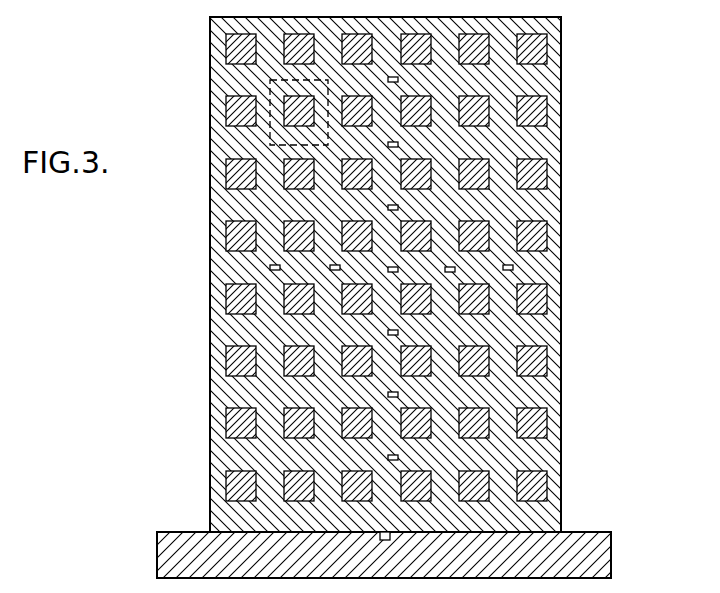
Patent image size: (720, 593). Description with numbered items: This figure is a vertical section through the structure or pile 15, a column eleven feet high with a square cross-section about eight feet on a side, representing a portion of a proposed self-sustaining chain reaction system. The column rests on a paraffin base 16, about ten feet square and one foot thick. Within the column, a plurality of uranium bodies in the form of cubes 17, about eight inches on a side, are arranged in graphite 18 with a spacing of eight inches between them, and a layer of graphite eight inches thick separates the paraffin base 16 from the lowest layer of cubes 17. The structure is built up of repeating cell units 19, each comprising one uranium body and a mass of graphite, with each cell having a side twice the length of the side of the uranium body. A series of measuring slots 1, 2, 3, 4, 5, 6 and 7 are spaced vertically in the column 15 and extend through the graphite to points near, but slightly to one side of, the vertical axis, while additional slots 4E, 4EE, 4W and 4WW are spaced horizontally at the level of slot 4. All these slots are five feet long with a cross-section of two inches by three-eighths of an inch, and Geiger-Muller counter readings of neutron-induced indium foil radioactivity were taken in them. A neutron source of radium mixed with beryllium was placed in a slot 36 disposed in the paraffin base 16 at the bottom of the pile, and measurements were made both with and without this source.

The measuring slot 1 is at (388, 458).
The measuring slot 2 is at (388, 395).
The measuring slot 3 is at (388, 333).
The measuring slot 4 is at (147, 66).
The measuring slot 4E is at (330, 268).
The measuring slot 4EE is at (270, 268).
The measuring slot 4W is at (455, 270).
The measuring slot 4WW is at (513, 268).
The measuring slot 5 is at (398, 208).
The measuring slot 6 is at (398, 145).
The measuring slot 7 is at (398, 80).
The structure or pile 15 is at (568, 183).
The paraffin base 16 is at (600, 548).
The uranium cubes 17 is at (538, 363).
The graphite 18 is at (538, 331).
The cell unit 19 is at (270, 88).
The slot 36 is at (385, 540).